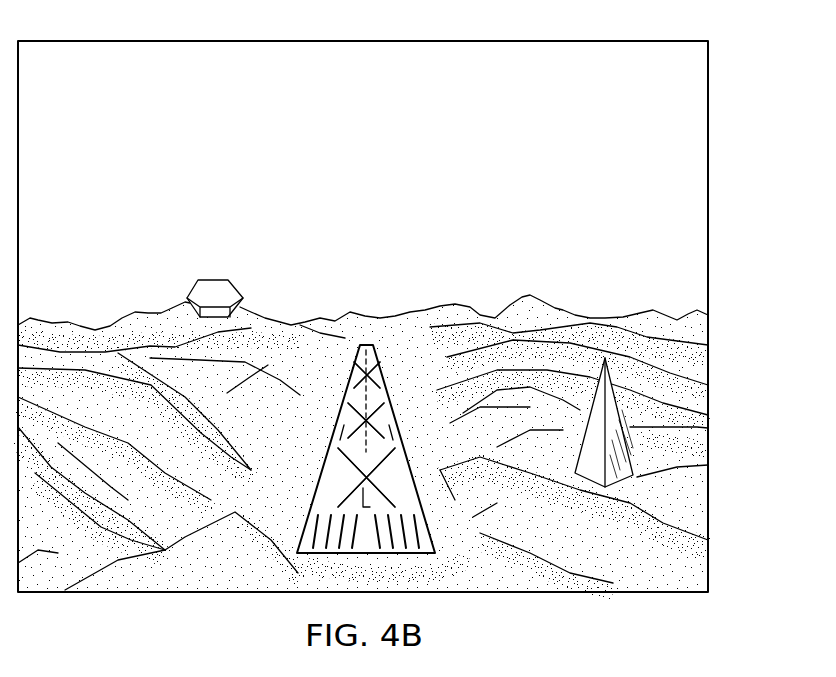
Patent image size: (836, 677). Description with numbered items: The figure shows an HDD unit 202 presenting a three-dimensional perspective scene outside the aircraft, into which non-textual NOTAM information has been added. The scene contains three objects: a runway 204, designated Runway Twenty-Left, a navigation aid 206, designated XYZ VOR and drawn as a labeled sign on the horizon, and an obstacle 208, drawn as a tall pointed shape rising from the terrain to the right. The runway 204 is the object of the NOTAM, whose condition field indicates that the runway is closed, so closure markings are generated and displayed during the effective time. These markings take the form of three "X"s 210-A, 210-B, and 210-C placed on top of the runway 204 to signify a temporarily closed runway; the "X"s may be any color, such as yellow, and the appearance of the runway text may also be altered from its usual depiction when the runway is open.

The HDD unit 202 is at (720, 138).
The runway 204 is at (400, 425).
The navigation aid 206 is at (193, 288).
The obstacle 208 is at (619, 392).
The "X" 210-A is at (318, 478).
The "X" 210-B is at (336, 418).
The "X" 210-C is at (350, 400).